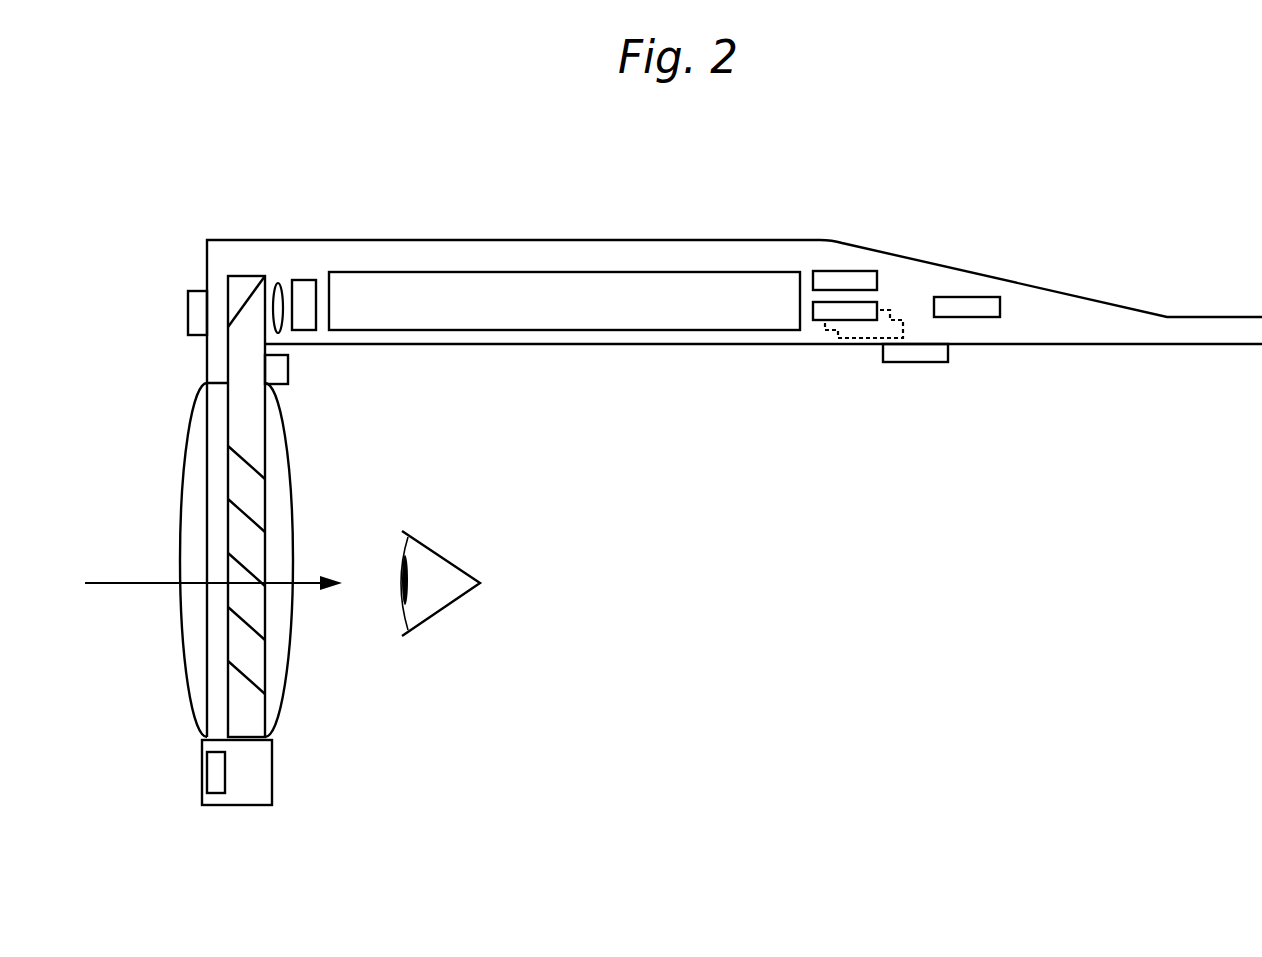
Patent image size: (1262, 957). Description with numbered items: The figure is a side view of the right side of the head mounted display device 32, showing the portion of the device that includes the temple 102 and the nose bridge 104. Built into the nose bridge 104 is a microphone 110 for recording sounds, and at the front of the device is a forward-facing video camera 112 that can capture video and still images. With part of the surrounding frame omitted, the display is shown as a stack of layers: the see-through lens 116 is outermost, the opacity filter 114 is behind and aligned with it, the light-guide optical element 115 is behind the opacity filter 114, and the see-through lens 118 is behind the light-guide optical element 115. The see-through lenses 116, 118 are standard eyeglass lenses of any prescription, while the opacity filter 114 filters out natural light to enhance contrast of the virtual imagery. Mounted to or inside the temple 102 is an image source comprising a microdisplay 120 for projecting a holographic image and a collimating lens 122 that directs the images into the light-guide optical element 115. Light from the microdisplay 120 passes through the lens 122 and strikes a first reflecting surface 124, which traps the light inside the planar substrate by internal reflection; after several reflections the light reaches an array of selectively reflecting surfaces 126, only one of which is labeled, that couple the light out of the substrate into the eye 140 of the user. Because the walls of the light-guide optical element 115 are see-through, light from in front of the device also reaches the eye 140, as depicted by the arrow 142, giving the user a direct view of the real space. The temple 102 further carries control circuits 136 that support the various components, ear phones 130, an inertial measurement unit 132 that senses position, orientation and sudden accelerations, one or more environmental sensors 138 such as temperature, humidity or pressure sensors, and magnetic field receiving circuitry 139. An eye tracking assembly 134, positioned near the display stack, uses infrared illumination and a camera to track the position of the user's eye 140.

The head mounted display device 32 is at (213, 153).
The temple 102 is at (837, 257).
The nose bridge 104 is at (260, 780).
The microphone 110 is at (218, 795).
The forward-facing video camera 112 is at (195, 327).
The opacity filter 114 is at (217, 425).
The light-guide optical element 115 is at (252, 445).
The see-through lens 116 is at (192, 512).
The see-through lens 118 is at (278, 530).
The microdisplay 120 is at (308, 280).
The lens 122 is at (279, 280).
The first reflecting surface 124 is at (243, 300).
The selectively reflecting surfaces 126 is at (257, 687).
The ear phones 130 is at (927, 362).
The inertial measurement unit 132 is at (865, 270).
The eye tracking assembly 134 is at (282, 377).
The control circuits 136 is at (420, 288).
The environmental sensors 138 is at (880, 308).
The magnetic field receiving circuitry 139 is at (1003, 298).
The eye 140 is at (432, 548).
The arrow 142 is at (127, 587).